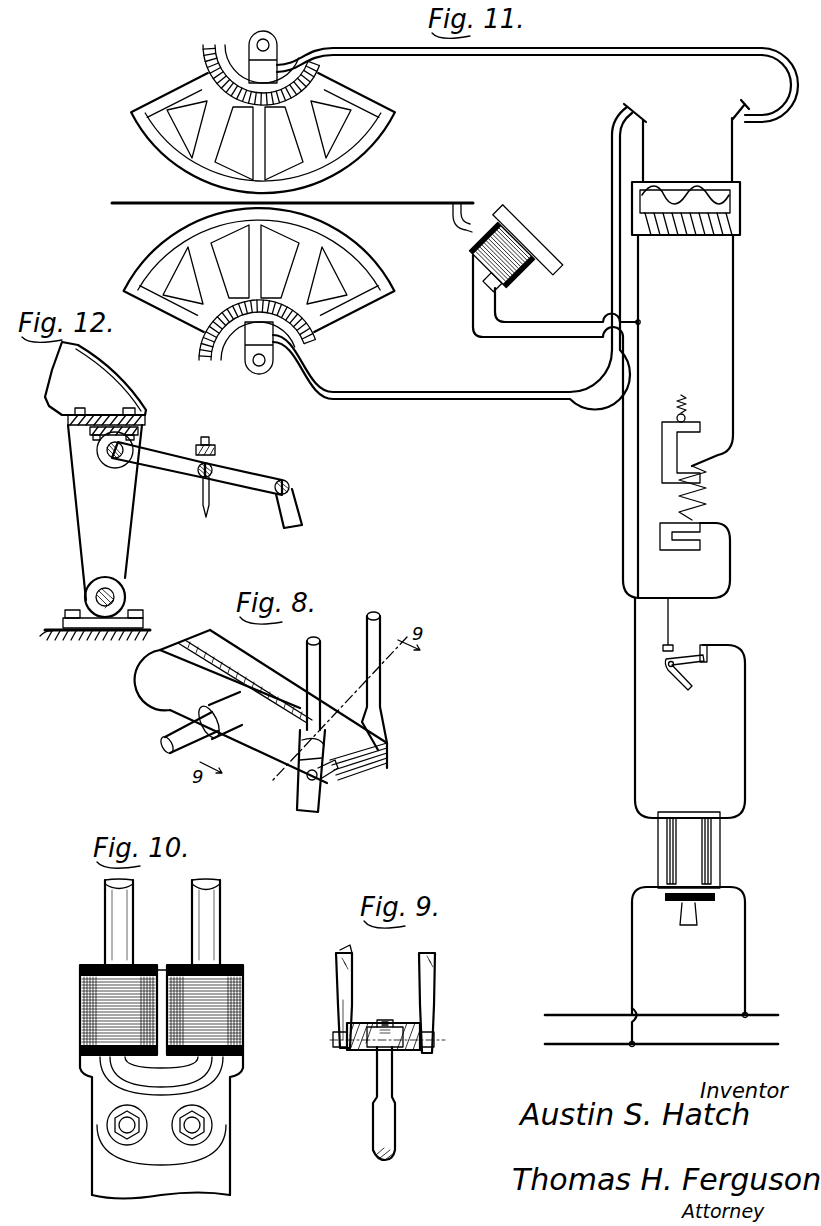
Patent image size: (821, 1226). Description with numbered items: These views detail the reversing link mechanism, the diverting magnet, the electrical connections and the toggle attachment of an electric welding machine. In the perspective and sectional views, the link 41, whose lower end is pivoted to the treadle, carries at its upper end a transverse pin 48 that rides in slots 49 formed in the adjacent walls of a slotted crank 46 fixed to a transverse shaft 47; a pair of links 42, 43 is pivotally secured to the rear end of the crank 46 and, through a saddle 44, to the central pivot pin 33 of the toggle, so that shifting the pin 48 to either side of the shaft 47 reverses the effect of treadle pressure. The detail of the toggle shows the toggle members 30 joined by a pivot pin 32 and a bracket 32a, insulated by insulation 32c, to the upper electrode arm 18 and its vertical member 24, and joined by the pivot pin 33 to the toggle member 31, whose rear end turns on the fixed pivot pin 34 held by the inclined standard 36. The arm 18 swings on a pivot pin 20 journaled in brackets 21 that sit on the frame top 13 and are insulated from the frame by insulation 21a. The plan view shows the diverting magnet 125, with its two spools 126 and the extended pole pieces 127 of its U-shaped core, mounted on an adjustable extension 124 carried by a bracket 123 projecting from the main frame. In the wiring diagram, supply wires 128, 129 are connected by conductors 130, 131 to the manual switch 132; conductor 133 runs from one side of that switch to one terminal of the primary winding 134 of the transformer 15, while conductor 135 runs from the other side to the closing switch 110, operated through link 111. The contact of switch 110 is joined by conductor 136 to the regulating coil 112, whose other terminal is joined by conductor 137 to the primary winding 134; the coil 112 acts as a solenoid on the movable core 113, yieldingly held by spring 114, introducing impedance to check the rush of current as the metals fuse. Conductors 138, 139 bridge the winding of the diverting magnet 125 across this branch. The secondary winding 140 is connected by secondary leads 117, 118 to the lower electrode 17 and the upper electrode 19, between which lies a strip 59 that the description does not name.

In FIG. 11, the upper electrode 19 is at (142, 157).
In FIG. 11, the lower electrode 17 is at (147, 254).
In FIG. 12, the upper electrode arm 18 is at (140, 400).
In FIG. 11, the blade strip 59 is at (279, 203).
In FIG. 11, the secondary lead 118 is at (342, 48).
In FIG. 11, the secondary lead 117 is at (362, 392).
In FIG. 11, the pole pieces 127 is at (472, 225).
In FIG. 10, the pole pieces 127 is at (192, 902).
In FIG. 11, the adjustable extension 124 is at (536, 250).
In FIG. 10, the adjustable extension 124 is at (95, 1120).
In FIG. 11, the diverting magnet 125 is at (465, 269).
In FIG. 10, the diverting magnet 125 is at (229, 957).
In FIG. 10, the spools 126 is at (245, 968).
In FIG. 10, the bracket 123 is at (92, 1195).
In FIG. 11, the conductor 138 is at (499, 311).
In FIG. 11, the conductor 139 is at (599, 426).
In FIG. 11, the transformer 15 is at (740, 206).
In FIG. 11, the secondary winding 140 is at (682, 186).
In FIG. 11, the primary winding 134 is at (696, 239).
In FIG. 11, the conductor 137 is at (734, 265).
In FIG. 11, the regulating coil 112 is at (704, 473).
In FIG. 11, the movable core 113 is at (700, 443).
In FIG. 11, the spring 114 is at (684, 394).
In FIG. 11, the conductor 136 is at (732, 581).
In FIG. 11, the conductor 135 is at (746, 666).
In FIG. 11, the closing switch 110 is at (690, 656).
In FIG. 11, the link 111 is at (683, 690).
In FIG. 11, the conductor 133 is at (636, 800).
In FIG. 11, the manual switch 132 is at (721, 853).
In FIG. 11, the conductor 130 is at (748, 976).
In FIG. 11, the conductor 131 is at (636, 973).
In FIG. 11, the supply wire 128 is at (575, 1014).
In FIG. 11, the supply wire 129 is at (572, 1045).
In FIG. 12, the insulation 32c is at (92, 428).
In FIG. 12, the bracket 32a is at (95, 455).
In FIG. 12, the pivot pin 32 is at (125, 452).
In FIG. 12, the vertical member 24 is at (80, 522).
In FIG. 12, the toggle members 30 is at (182, 474).
In FIG. 12, the toggle member 31 is at (250, 496).
In FIG. 12, the pivot pin 33 is at (212, 468).
In FIG. 12, the fixed pivot pin 34 is at (291, 488).
In FIG. 12, the inclined standard 36 is at (303, 528).
In FIG. 12, the saddle 44 is at (216, 447).
In FIG. 12, the link 43 is at (209, 519).
In FIG. 8, the link 43 is at (380, 614).
In FIG. 9, the link 43 is at (436, 953).
In FIG. 12, the pivot pin 20 is at (118, 600).
In FIG. 12, the brackets 21 is at (65, 620).
In FIG. 12, the insulation 21a is at (35, 645).
In FIG. 12, the top 13 is at (100, 635).
In FIG. 8, the transverse shaft 47 is at (160, 742).
In FIG. 8, the slotted crank 46 is at (355, 765).
In FIG. 9, the slotted crank 46 is at (430, 1052).
In FIG. 8, the slots 49 is at (192, 648).
In FIG. 9, the slots 49 is at (403, 1026).
In FIG. 8, the link 42 is at (306, 641).
In FIG. 9, the link 42 is at (337, 988).
In FIG. 8, the link 41 is at (302, 806).
In FIG. 9, the link 41 is at (394, 1152).
In FIG. 8, the transverse pin 48 is at (300, 780).
In FIG. 9, the transverse pin 48 is at (366, 1050).